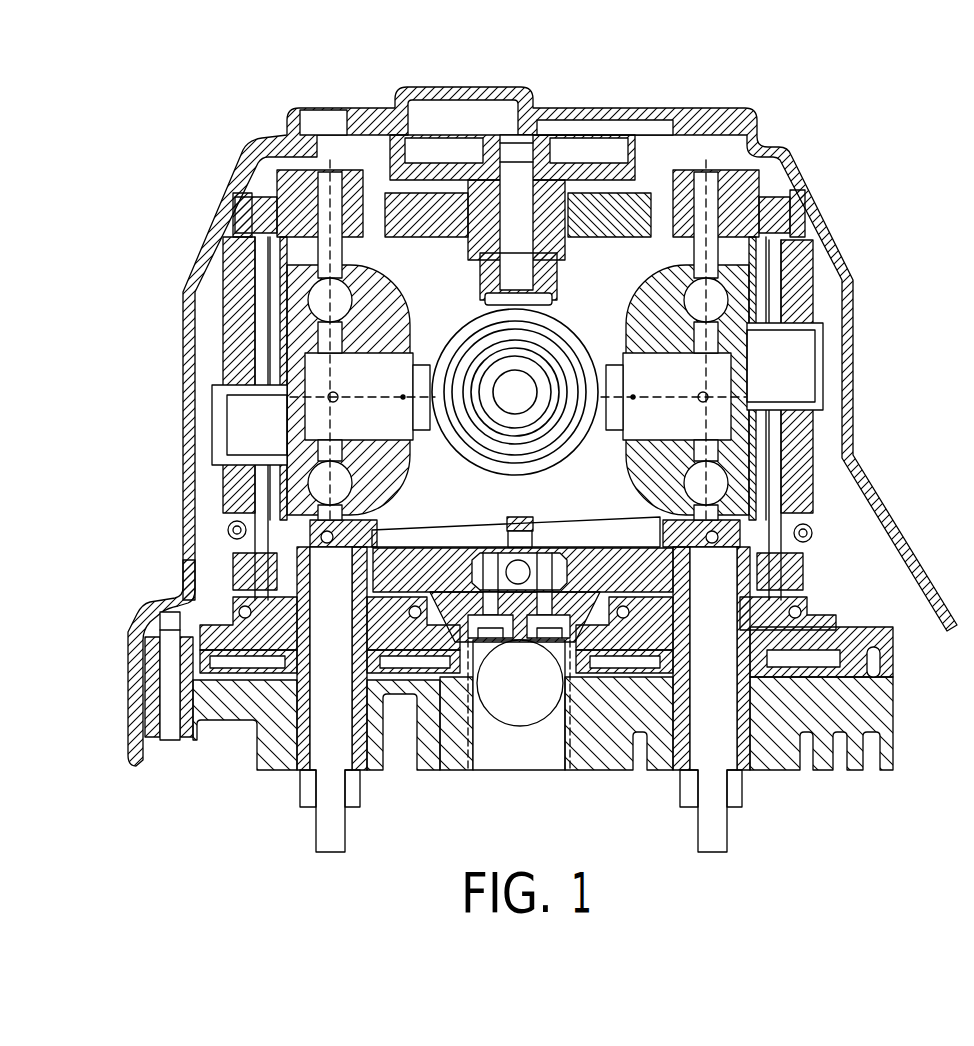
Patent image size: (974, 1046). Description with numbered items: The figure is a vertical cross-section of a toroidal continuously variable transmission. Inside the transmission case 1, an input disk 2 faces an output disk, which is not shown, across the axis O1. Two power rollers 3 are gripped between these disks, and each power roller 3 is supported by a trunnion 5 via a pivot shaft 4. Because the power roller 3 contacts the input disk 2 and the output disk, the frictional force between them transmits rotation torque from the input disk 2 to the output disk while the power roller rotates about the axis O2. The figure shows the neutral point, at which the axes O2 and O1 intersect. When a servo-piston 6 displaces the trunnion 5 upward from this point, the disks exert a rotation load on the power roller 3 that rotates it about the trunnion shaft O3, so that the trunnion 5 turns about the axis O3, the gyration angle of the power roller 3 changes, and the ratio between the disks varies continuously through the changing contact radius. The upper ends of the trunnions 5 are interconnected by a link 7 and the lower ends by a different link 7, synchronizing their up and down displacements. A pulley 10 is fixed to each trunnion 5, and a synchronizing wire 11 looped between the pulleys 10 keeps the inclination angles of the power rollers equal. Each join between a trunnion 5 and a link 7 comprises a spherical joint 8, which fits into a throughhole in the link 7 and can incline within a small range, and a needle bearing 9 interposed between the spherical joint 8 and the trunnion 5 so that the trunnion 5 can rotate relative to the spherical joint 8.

The transmission case 1 is at (784, 145).
The input disk 2 is at (635, 187).
The power roller 3 is at (394, 310).
The pivot shaft 4 is at (236, 410).
The trunnion 5 is at (230, 300).
The servo-piston 6 is at (248, 668).
The link 7 is at (238, 212).
The spherical joint 8 is at (262, 203).
The needle bearing 9 is at (288, 192).
The pulley 10 is at (205, 666).
The synchronizing wire 11 is at (238, 626).
The axis O1 is at (513, 390).
The axis O2 is at (367, 400).
The trunnion shaft O3 is at (330, 160).